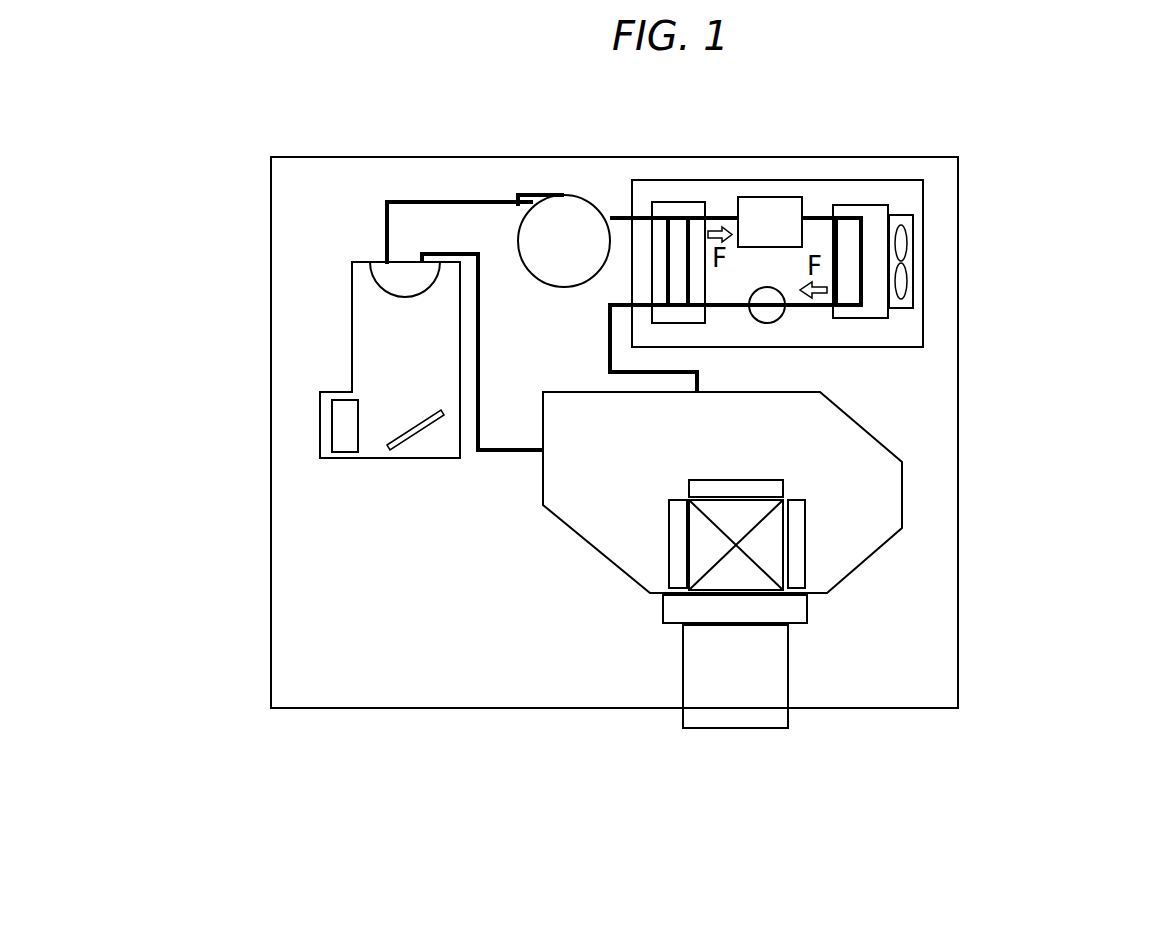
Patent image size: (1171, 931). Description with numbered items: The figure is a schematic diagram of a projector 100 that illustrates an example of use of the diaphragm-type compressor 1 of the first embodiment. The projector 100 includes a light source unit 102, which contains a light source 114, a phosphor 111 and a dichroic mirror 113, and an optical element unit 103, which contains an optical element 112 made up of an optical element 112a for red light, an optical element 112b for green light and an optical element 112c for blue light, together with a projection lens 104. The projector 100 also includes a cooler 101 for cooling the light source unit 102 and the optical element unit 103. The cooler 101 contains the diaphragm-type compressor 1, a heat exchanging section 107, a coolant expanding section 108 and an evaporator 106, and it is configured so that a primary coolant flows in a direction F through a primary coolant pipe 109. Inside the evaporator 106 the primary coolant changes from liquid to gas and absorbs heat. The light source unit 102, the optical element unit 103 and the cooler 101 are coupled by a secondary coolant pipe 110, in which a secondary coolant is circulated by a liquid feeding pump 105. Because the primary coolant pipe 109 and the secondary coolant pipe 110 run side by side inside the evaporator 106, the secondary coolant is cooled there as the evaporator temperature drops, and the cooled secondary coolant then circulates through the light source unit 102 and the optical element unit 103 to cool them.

The projector 100 is at (1004, 170).
The cooler 101 is at (722, 180).
The diaphragm-type compressor 1 is at (767, 208).
The light source unit 102 is at (378, 460).
The optical element unit 103 is at (553, 513).
The projection lens 104 is at (715, 687).
The liquid feeding pump 105 is at (560, 212).
The evaporator 106 is at (675, 210).
The heat exchanging section 107 is at (875, 213).
The coolant expanding section 108 is at (769, 311).
The primary coolant pipe 109 is at (822, 213).
The secondary coolant pipe 110 is at (450, 200).
The phosphor 111 is at (343, 418).
The optical element 112 is at (812, 594).
The optical element for red light 112a is at (673, 540).
The optical element for green light 112b is at (743, 486).
The optical element for blue light 112c is at (798, 543).
The dichroic mirror 113 is at (418, 435).
The light source 114 is at (400, 275).